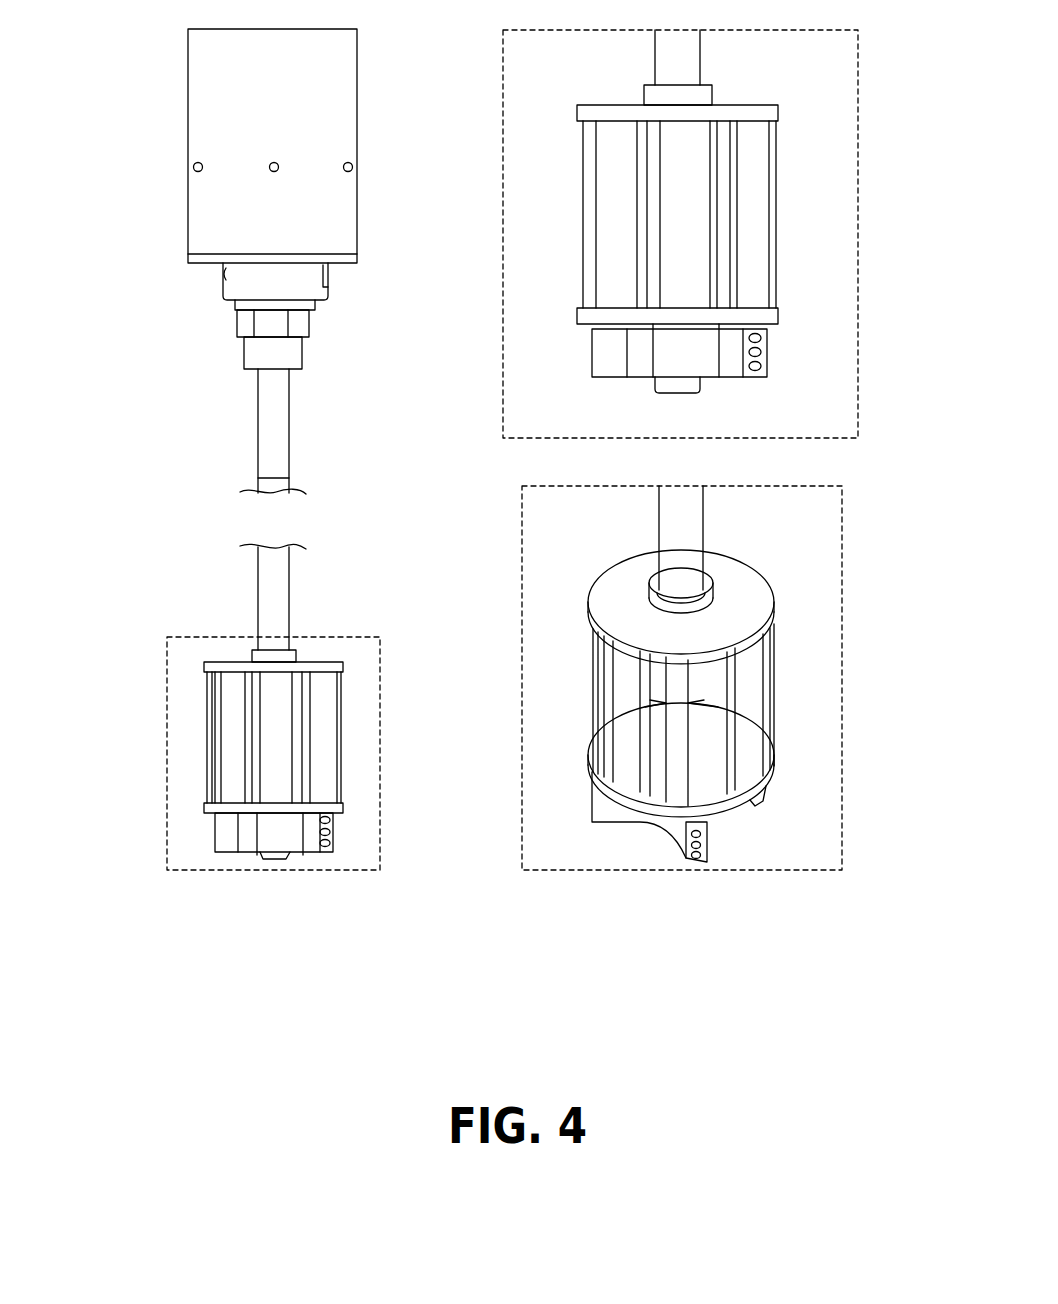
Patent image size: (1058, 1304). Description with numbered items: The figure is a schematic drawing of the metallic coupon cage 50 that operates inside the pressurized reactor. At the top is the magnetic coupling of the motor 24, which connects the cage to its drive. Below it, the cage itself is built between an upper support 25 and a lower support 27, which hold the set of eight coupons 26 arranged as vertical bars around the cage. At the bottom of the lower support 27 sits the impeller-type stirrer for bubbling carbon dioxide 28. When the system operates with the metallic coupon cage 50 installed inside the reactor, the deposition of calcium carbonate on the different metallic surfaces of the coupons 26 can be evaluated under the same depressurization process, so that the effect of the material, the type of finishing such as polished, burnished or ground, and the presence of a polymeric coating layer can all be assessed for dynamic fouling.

The magnetic coupling of the motor 24 is at (190, 127).
The upper support 25 is at (772, 115).
The set of 8 coupons 26 is at (772, 213).
The lower support 27 is at (772, 317).
The impeller-type stirrer for bubbling CO2 28 is at (592, 352).
The metallic coupon cage 50 is at (152, 753).